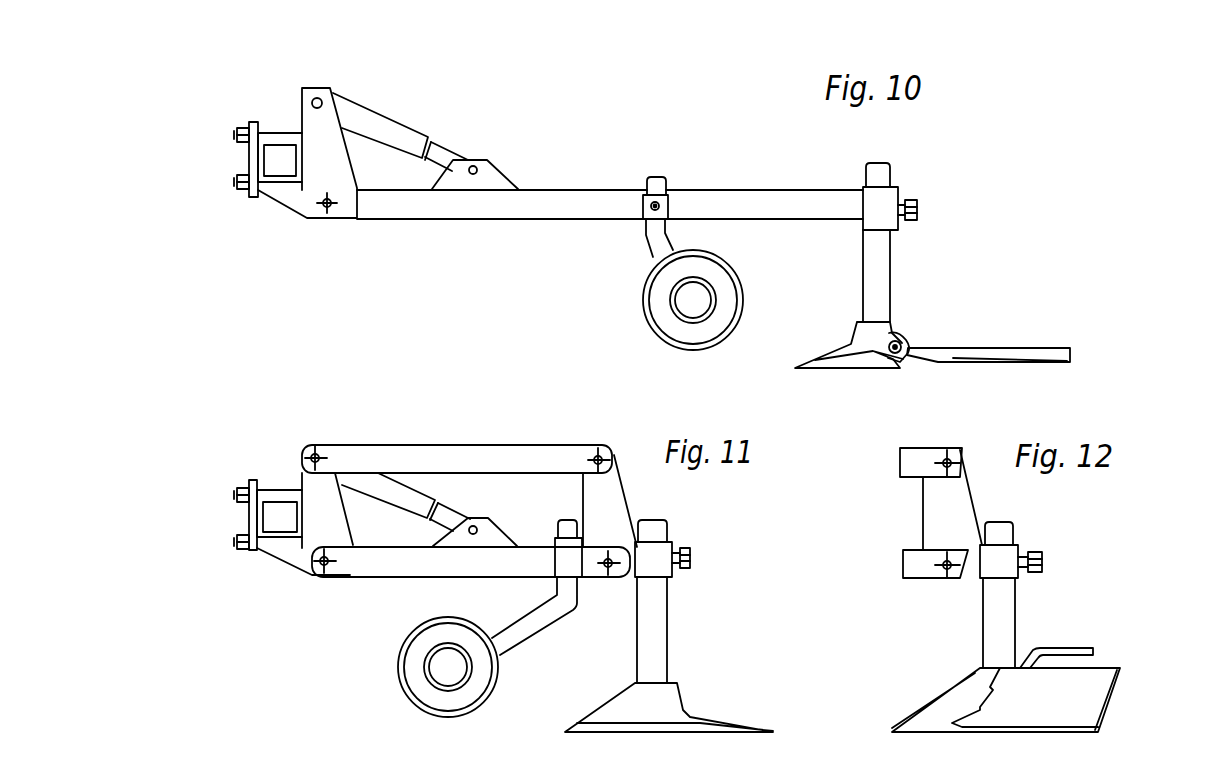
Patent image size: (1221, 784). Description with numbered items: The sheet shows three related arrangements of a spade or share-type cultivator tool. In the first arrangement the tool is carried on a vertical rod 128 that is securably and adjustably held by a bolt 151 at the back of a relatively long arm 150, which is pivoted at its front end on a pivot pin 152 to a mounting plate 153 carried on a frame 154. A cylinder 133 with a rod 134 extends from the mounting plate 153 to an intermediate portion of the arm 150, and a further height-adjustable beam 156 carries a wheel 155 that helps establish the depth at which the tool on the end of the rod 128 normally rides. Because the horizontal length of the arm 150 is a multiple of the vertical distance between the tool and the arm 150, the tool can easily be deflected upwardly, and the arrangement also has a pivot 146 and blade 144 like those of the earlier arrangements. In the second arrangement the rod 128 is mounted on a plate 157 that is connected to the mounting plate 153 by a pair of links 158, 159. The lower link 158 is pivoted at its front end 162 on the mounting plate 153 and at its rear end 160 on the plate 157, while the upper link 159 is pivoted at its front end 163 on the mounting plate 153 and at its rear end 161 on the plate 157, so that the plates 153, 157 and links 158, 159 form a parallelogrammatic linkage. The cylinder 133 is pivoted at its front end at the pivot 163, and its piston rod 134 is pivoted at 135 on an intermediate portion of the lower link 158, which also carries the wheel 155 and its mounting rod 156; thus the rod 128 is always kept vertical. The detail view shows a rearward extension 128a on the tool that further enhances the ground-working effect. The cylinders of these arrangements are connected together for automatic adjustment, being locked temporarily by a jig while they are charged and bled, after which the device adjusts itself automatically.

In FIG. 10, the vertical rod 128 is at (880, 302).
In FIG. 11, the vertical rod 128 is at (652, 660).
In FIG. 12, the rearward extension 128a is at (1087, 688).
In FIG. 10, the cylinder 133 is at (362, 115).
In FIG. 11, the cylinder 133 is at (413, 497).
In FIG. 10, the piston rod 134 is at (448, 157).
In FIG. 11, the piston rod 134 is at (447, 517).
In FIG. 11, the pivot 135 is at (478, 530).
In FIG. 10, the blade 144 is at (988, 350).
In FIG. 10, the pivot 146 is at (897, 367).
In FIG. 10, the arm 150 is at (560, 200).
In FIG. 10, the bolt 151 is at (918, 205).
In FIG. 10, the pivot pin 152 is at (328, 208).
In FIG. 10, the mounting plate 153 is at (298, 195).
In FIG. 11, the mounting plate 153 is at (295, 552).
In FIG. 10, the frame 154 is at (260, 167).
In FIG. 11, the frame 154 is at (268, 515).
In FIG. 10, the wheel 155 is at (675, 323).
In FIG. 11, the wheel 155 is at (415, 665).
In FIG. 10, the height-adjustable beam 156 is at (648, 250).
In FIG. 11, the height-adjustable beam 156 is at (522, 627).
In FIG. 11, the plate 157 is at (615, 512).
In FIG. 12, the plate 157 is at (950, 515).
In FIG. 11, the lower link 158 is at (415, 562).
In FIG. 11, the upper link 159 is at (423, 457).
In FIG. 11, the rear end pivot of lower link 160 is at (608, 570).
In FIG. 11, the rear end pivot of upper link 161 is at (598, 455).
In FIG. 11, the front end pivot of lower link 162 is at (322, 567).
In FIG. 11, the front end pivot of upper link 163 is at (302, 450).